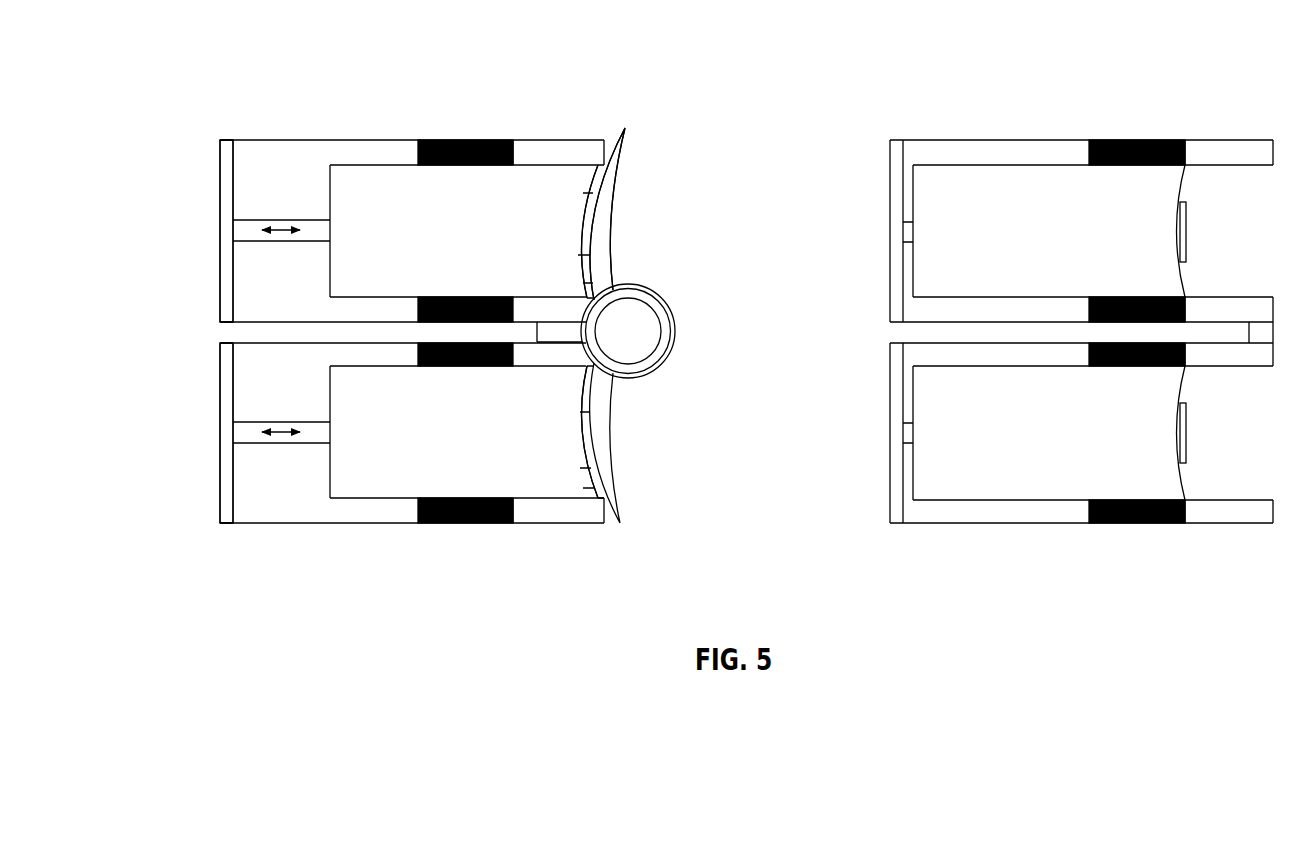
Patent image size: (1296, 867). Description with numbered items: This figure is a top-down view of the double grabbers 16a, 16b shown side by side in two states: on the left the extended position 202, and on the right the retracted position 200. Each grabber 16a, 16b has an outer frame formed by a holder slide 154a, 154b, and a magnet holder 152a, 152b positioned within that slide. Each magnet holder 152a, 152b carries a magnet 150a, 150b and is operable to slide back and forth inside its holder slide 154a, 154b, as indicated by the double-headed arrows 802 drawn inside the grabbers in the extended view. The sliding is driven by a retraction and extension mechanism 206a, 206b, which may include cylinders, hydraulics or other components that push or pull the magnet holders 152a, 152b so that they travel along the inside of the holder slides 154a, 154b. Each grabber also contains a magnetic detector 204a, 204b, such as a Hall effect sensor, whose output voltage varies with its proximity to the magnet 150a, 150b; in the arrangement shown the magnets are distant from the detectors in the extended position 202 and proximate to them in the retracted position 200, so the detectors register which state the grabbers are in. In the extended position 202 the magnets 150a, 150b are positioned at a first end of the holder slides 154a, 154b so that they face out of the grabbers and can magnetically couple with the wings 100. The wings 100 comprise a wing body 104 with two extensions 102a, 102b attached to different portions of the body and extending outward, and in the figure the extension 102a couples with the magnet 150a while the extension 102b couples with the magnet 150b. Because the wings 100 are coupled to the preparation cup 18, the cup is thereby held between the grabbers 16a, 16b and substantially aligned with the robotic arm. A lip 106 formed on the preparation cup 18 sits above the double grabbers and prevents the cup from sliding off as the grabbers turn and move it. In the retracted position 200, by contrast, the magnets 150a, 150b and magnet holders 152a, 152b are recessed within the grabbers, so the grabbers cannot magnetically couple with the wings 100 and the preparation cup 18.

The extended position 202 is at (410, 56).
The retracted position 200 is at (1100, 58).
The grabber 16a is at (250, 185).
The grabber 16b is at (250, 465).
The retraction and extension mechanism 206a is at (228, 210).
The retraction and extension mechanism 206b is at (228, 492).
The movable slider 802 is at (267, 220).
The magnetic detector 204a is at (465, 140).
The magnetic detector 204b is at (423, 297).
The holder slide 154a is at (551, 140).
The holder slide 154b is at (565, 514).
The wing body 104 is at (580, 335).
The wings 100 is at (625, 128).
The extension 102a is at (613, 275).
The extension 102b is at (612, 407).
The magnet holder 152a is at (577, 183).
The magnet holder 152b is at (582, 492).
The magnet 150a is at (585, 225).
The magnet 150b is at (585, 447).
The preparation cup 18 is at (657, 313).
The lip 106 is at (677, 345).